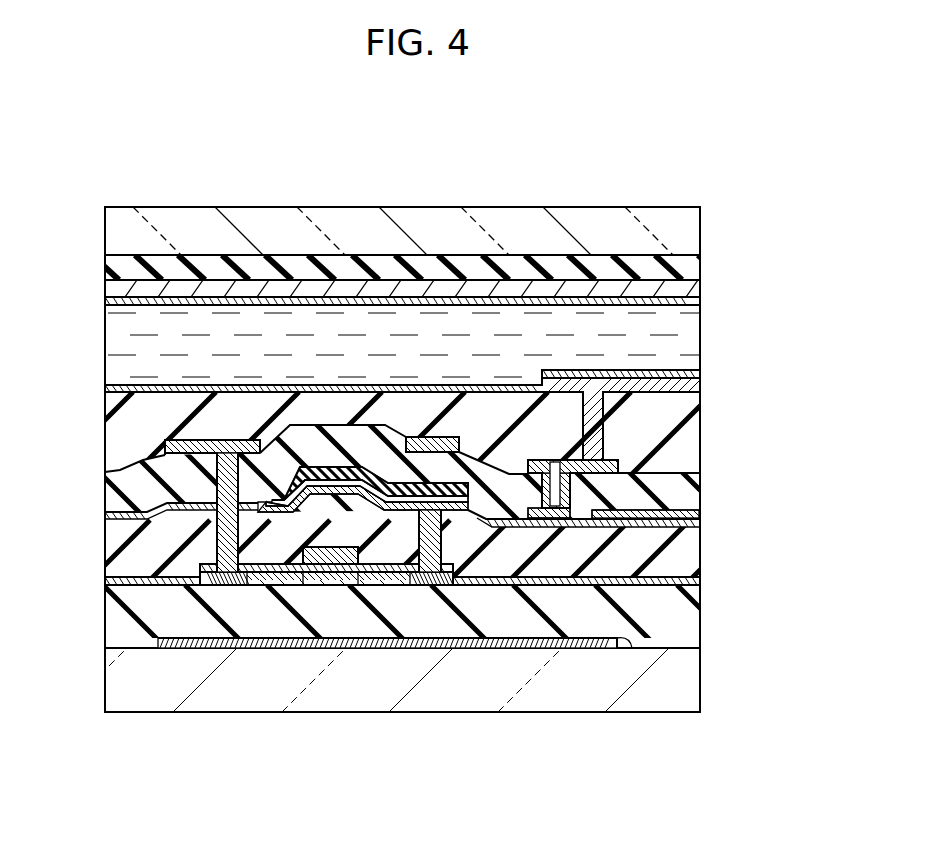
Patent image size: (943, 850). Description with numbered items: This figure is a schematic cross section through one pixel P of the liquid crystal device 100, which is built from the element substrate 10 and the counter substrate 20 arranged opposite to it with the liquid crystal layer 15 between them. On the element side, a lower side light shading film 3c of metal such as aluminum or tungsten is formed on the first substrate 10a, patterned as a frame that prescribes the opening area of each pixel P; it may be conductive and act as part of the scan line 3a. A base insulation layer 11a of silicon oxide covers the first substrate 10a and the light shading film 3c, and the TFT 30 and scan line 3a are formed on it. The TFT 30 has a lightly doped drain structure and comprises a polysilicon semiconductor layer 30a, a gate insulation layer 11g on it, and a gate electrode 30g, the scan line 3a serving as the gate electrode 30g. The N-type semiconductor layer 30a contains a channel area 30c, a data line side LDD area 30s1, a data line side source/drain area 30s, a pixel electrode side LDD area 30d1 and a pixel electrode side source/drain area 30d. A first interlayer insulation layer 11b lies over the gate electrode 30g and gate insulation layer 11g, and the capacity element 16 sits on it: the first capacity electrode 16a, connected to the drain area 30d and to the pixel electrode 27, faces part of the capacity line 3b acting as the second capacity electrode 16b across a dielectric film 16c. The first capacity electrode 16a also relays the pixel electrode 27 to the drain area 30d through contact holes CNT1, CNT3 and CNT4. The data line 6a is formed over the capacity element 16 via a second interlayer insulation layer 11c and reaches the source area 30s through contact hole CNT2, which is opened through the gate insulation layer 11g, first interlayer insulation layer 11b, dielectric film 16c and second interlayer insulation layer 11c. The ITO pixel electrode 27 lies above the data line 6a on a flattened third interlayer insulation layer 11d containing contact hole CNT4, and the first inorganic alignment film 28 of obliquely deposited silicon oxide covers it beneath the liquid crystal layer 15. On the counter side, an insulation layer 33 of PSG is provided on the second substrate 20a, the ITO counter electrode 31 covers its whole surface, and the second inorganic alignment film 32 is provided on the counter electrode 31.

The liquid crystal device 100 is at (665, 135).
The pixel P is at (402, 411).
The counter substrate 20 is at (430, 263).
The second substrate 20a is at (700, 231).
The insulation layer 33 is at (700, 263).
The counter electrode 31 is at (700, 289).
The inorganic alignment film 32 is at (429, 304).
The liquid crystal layer 15 is at (700, 351).
The element substrate 10 is at (444, 564).
The inorganic alignment film 28 is at (700, 374).
The pixel electrode 27 is at (700, 388).
The third interlayer insulation layer 11d is at (700, 446).
The second interlayer insulation layer 11c is at (700, 494).
The dielectric film 16c is at (700, 523).
The first interlayer insulation layer 11b is at (700, 553).
The gate insulation layer 11g is at (700, 583).
The base insulation layer 11a is at (700, 628).
The first substrate 10a is at (420, 680).
The capacity element 16 is at (464, 415).
The first capacity electrode 16a is at (290, 490).
The second capacity electrode 16b is at (380, 470).
The capacity line 3b is at (420, 363).
The data line 6a is at (185, 443).
The contact hole CNT1 is at (442, 545).
The contact hole CNT2 is at (233, 545).
The contact hole CNT3 is at (571, 497).
The contact hole CNT4 is at (584, 433).
The gate electrode 30g is at (310, 548).
The scan line 3a is at (382, 526).
The semiconductor layer 30a is at (225, 650).
The TFT 30 is at (332, 694).
The data line side source/drain area 30s is at (227, 587).
The data line side LDD area 30s1 is at (277, 587).
The channel area 30c is at (333, 587).
The pixel electrode side LDD area 30d1 is at (386, 587).
The pixel electrode side source/drain area 30d is at (439, 674).
The lower side light shading film 3c is at (633, 652).